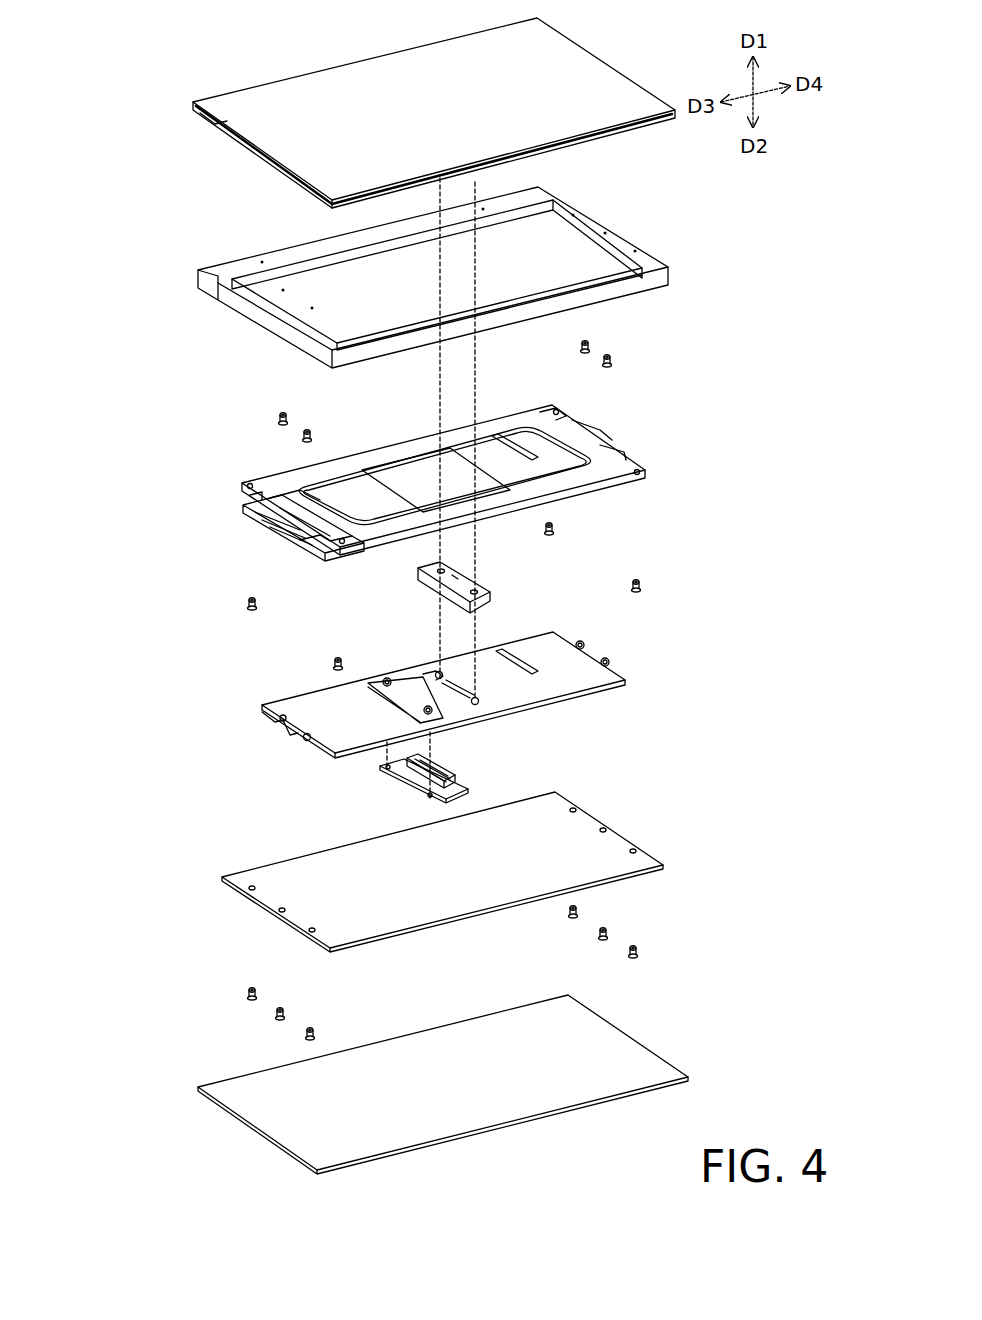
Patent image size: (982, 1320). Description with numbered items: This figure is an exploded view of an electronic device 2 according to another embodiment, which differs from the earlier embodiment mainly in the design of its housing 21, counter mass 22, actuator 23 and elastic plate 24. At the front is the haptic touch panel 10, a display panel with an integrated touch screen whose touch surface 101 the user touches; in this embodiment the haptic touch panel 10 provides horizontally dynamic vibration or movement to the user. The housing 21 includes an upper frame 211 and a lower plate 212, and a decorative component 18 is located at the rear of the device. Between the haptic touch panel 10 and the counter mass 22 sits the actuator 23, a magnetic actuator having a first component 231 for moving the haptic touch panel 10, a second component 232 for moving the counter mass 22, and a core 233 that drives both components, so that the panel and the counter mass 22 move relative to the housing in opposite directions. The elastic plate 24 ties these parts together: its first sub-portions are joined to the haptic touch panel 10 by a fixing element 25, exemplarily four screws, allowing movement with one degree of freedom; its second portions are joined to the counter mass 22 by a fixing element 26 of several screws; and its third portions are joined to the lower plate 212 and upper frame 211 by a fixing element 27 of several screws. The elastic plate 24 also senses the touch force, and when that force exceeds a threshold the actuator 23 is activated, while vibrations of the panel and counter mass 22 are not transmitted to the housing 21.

The electronic device 2 is at (72, 32).
The haptic touch panel 10 is at (250, 150).
The touch surface 101 is at (388, 92).
The housing 21 is at (110, 300).
The upper frame 211 is at (228, 296).
The lower plate 212 is at (236, 877).
The counter mass 22 is at (267, 703).
The actuator 23 is at (694, 643).
The first component 231 is at (478, 586).
The second component 232 is at (475, 784).
The core 233 is at (440, 761).
The elastic plate 24 is at (620, 455).
The fixing element 25 is at (649, 551).
The fixing element 26 is at (616, 351).
The fixing element 27 is at (649, 917).
The decorative component 18 is at (258, 1133).